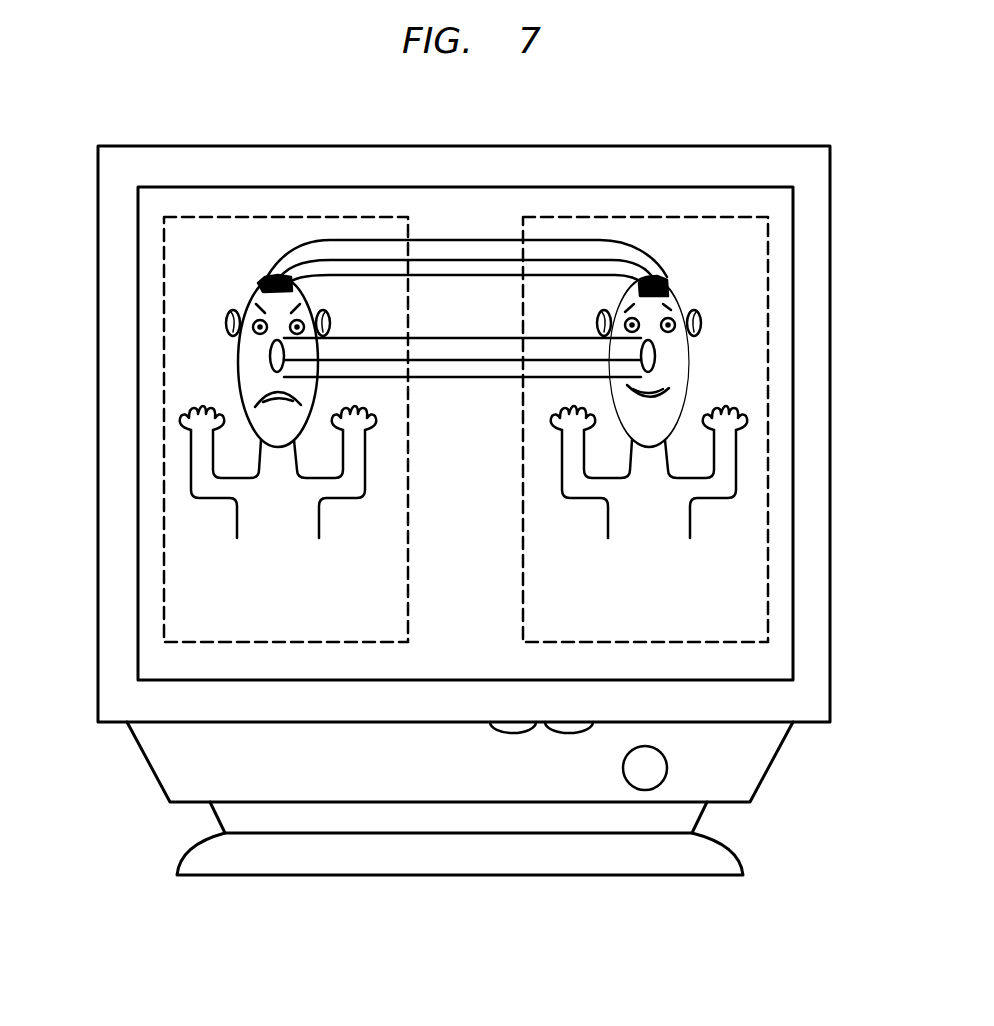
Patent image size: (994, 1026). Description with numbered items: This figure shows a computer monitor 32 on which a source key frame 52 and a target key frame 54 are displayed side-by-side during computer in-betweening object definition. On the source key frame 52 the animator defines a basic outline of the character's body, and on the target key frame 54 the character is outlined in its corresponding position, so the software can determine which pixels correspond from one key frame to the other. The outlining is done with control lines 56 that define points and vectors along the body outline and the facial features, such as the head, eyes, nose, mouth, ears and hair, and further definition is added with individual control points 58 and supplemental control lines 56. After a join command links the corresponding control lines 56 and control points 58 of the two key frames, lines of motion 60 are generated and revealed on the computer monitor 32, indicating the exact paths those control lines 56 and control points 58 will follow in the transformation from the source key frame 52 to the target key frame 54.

The computer monitor 32 is at (832, 456).
The target key frame 54 is at (767, 341).
The source key frame 52 is at (163, 268).
The control lines 56 is at (197, 497).
The control points 58 is at (303, 310).
The lines of motion 60 is at (613, 244).